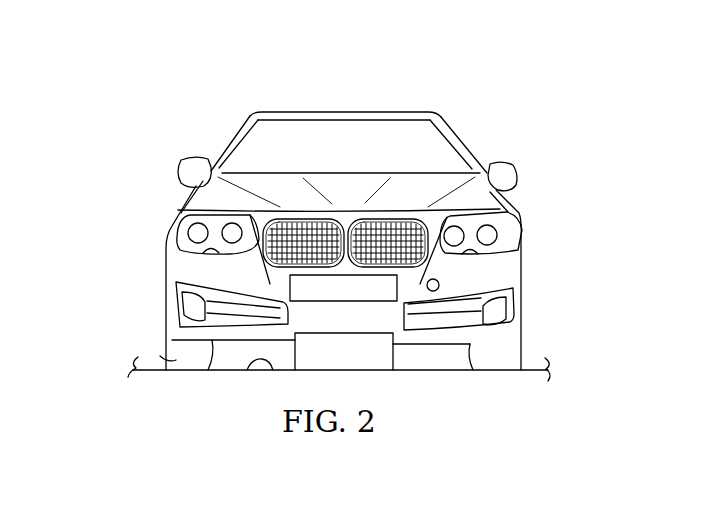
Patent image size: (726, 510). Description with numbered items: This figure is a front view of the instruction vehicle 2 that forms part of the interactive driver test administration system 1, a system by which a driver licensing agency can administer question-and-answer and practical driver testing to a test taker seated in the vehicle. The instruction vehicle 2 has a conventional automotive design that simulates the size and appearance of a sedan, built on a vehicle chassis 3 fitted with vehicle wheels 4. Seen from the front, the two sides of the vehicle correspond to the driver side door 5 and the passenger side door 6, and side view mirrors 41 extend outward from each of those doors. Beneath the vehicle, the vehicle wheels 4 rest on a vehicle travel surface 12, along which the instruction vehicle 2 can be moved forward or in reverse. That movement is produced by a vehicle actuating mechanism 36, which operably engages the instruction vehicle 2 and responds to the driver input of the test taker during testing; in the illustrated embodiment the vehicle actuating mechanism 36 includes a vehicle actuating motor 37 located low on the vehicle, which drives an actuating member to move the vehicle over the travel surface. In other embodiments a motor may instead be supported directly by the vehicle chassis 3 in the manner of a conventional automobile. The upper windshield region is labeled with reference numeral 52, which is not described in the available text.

The interactive driver test administration system 1 is at (241, 40).
The instruction vehicle 2 is at (445, 108).
The vehicle chassis 3 is at (510, 278).
The vehicle wheels 4 is at (166, 360).
The driver side door 5 is at (465, 138).
The passenger side door 6 is at (231, 138).
The vehicle travel surface 12 is at (247, 372).
The vehicle actuating mechanism 36 is at (432, 362).
The vehicle actuating motor 37 is at (367, 362).
The side view mirrors 41 is at (181, 166).
The windshield 52 is at (354, 131).